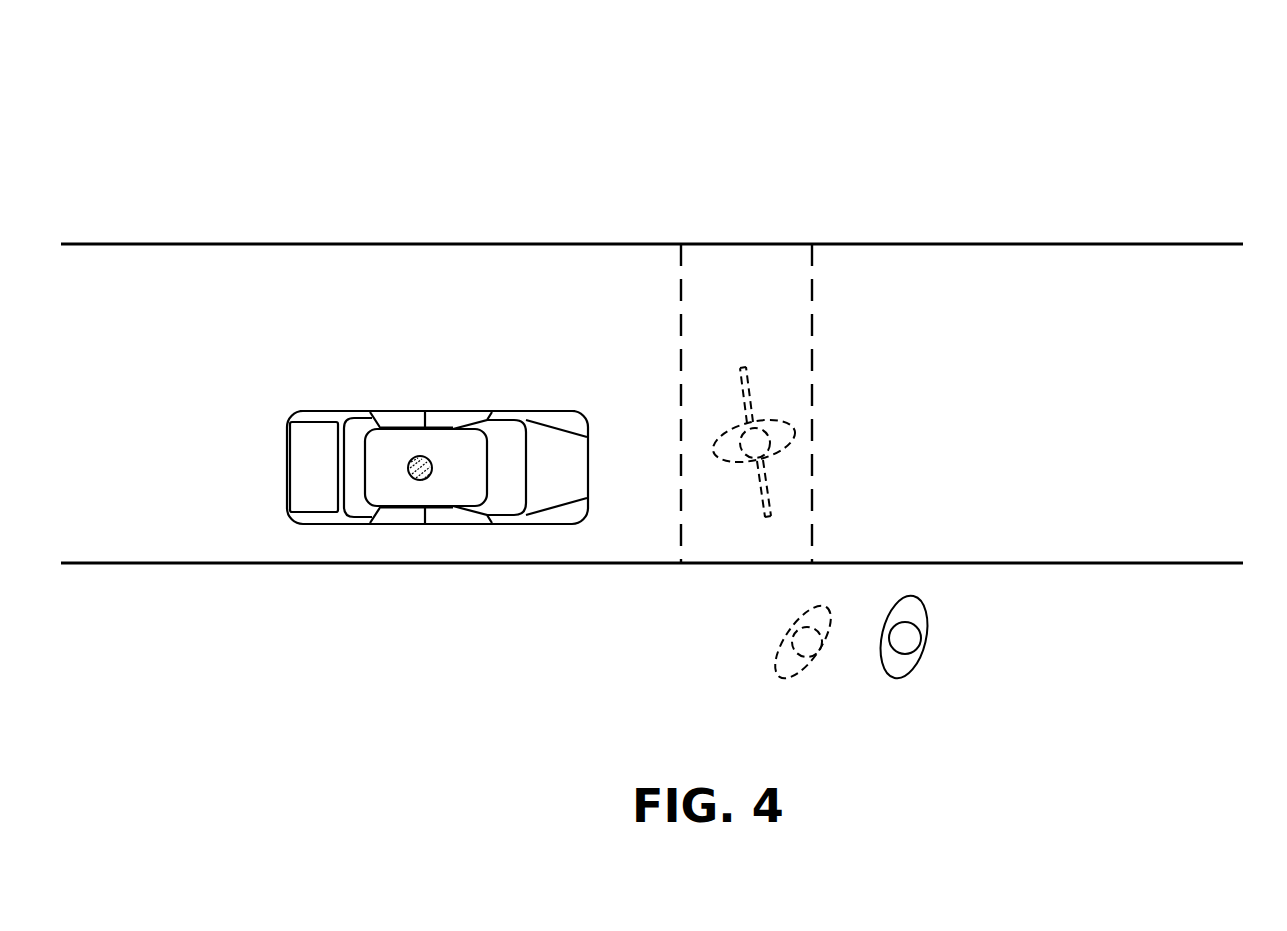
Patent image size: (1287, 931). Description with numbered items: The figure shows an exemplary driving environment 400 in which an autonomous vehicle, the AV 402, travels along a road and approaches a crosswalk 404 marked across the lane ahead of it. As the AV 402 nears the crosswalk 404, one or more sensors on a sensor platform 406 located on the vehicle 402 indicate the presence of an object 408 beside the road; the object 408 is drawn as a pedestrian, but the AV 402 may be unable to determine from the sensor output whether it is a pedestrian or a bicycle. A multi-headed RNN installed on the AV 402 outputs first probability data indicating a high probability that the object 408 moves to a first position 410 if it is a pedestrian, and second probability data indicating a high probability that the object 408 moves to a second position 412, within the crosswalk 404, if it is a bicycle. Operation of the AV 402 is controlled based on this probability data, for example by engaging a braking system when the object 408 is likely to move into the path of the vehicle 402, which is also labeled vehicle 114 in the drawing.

The driving scenario / environment 400 is at (343, 93).
The vehicle roof / body 402 is at (342, 412).
The lane markings (crosswalk / lane lines) 404 is at (797, 293).
The sensor 406 is at (417, 480).
The pedestrian on sidewalk 408 is at (908, 672).
The predicted pedestrian position 410 is at (812, 611).
The pedestrian in roadway (predicted) 412 is at (797, 432).
The vehicle 114 is at (555, 535).